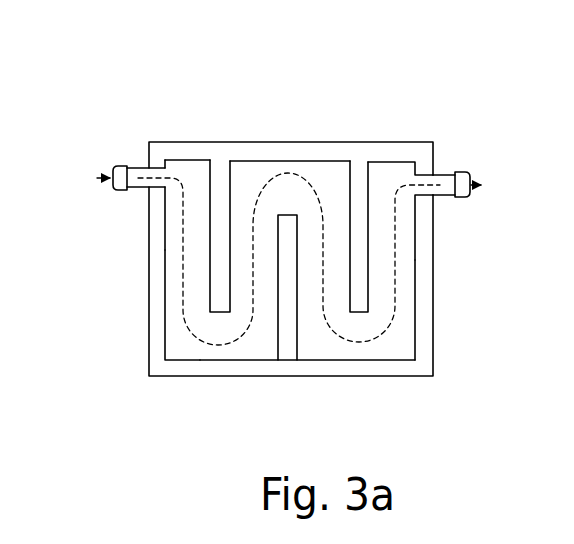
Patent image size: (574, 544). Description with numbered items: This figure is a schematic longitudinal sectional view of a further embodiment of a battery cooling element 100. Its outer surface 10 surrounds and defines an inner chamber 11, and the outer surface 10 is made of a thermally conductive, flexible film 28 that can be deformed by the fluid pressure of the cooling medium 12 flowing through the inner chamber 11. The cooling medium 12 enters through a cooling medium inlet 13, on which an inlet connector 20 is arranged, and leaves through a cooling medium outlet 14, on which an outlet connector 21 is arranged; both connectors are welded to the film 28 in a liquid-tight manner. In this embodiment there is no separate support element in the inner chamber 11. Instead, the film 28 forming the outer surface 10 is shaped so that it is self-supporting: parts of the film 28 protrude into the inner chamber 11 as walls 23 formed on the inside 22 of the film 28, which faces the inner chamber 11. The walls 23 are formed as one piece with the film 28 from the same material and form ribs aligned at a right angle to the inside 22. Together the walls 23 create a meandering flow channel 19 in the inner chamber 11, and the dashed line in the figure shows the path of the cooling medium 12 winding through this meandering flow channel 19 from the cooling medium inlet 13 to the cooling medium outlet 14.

The battery cooling element 100 is at (147, 81).
The outer surface 10 is at (291, 216).
The film 28 is at (288, 142).
The inlet connector 20 is at (135, 168).
The outlet connector 21 is at (442, 173).
The cooling medium inlet 13 is at (162, 187).
The inner chamber 11 is at (177, 348).
The inside 22 is at (228, 362).
The meandering flow channel 19 is at (400, 335).
The cooling medium outlet 14 is at (425, 198).
The walls 23 is at (357, 200).
The cooling medium 12 is at (400, 252).